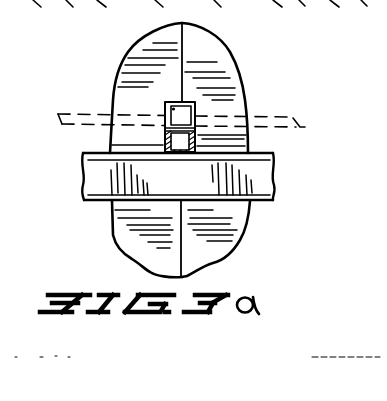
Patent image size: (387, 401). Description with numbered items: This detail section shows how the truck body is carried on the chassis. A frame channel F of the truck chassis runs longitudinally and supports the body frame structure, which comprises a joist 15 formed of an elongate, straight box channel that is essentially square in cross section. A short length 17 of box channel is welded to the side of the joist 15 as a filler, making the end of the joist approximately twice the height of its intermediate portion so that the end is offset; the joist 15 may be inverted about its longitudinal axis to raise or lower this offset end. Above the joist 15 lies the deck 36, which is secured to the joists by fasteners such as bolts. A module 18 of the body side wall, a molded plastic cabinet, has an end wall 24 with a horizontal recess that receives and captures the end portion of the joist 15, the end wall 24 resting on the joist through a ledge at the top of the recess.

The module 18 is at (147, 55).
The end wall 24 is at (165, 102).
The short length of box channel 17 is at (195, 108).
The deck 36 is at (280, 117).
The joist 15 is at (195, 140).
The frame channel F is at (257, 182).